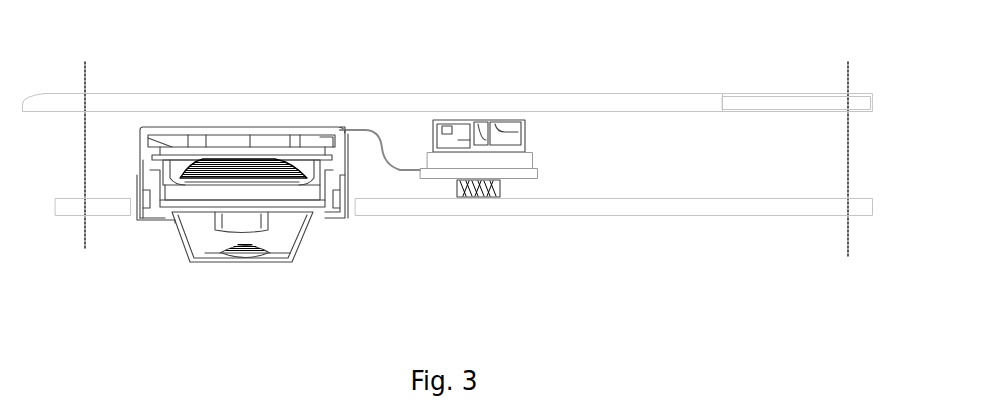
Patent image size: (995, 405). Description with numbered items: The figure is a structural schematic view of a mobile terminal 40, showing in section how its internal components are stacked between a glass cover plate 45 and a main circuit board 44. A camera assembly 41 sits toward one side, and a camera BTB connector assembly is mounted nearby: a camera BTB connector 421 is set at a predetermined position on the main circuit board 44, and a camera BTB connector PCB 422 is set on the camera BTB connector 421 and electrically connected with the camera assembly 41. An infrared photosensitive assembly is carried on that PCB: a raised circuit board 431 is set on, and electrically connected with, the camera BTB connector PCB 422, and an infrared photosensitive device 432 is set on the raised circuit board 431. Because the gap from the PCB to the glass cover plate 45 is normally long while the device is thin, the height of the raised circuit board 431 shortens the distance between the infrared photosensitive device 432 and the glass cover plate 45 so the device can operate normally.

The mobile terminal 40 is at (80, 135).
The camera assembly 41 is at (275, 190).
The camera BTB connector 421 is at (487, 192).
The camera BTB connector PCB 422 is at (432, 178).
The raised circuit board 431 is at (528, 163).
The infrared photosensitive device 432 is at (444, 142).
The main circuit board 44 is at (706, 207).
The glass cover plate 45 is at (647, 102).